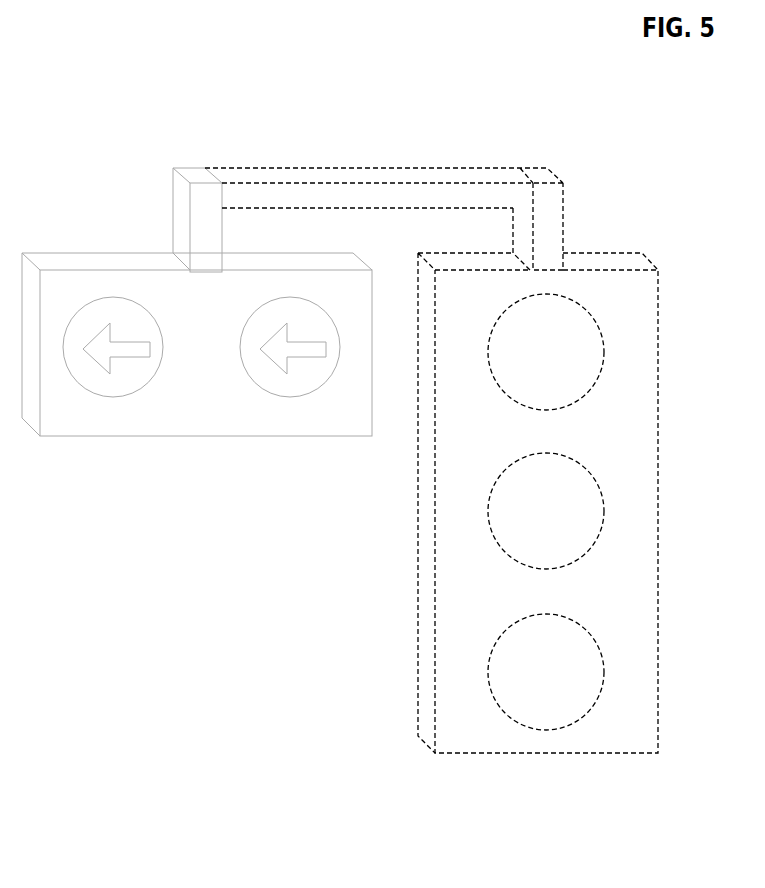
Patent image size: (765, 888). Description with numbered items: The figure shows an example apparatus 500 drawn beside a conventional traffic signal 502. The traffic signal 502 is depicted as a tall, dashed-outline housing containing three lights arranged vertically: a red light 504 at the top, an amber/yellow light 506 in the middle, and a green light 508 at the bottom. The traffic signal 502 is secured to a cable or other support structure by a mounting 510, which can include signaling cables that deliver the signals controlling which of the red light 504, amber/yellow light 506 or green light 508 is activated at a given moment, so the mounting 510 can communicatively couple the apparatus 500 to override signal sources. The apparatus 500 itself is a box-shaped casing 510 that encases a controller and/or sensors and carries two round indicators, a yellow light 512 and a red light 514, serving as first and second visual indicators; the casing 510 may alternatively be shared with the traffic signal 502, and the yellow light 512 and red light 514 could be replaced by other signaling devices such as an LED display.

The apparatus 500 is at (127, 57).
The traffic signal 502 is at (647, 306).
The red light 504 is at (577, 370).
The amber/yellow light 506 is at (577, 487).
The green light 508 is at (563, 647).
The mounting 510 is at (172, 427).
The yellow light 512 is at (282, 378).
The red light 514 is at (127, 373).